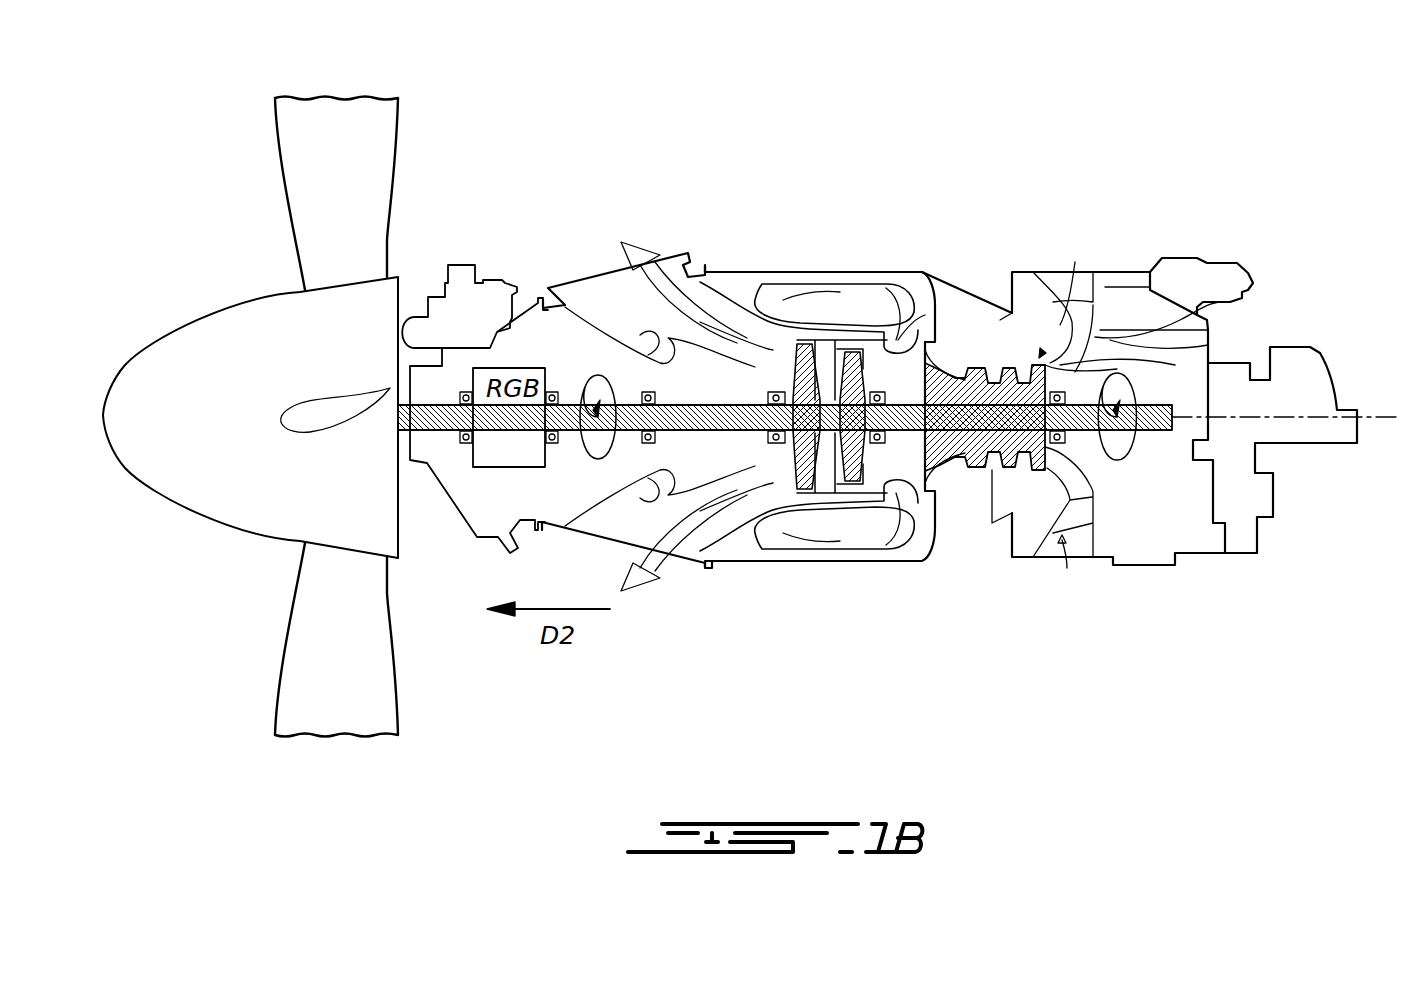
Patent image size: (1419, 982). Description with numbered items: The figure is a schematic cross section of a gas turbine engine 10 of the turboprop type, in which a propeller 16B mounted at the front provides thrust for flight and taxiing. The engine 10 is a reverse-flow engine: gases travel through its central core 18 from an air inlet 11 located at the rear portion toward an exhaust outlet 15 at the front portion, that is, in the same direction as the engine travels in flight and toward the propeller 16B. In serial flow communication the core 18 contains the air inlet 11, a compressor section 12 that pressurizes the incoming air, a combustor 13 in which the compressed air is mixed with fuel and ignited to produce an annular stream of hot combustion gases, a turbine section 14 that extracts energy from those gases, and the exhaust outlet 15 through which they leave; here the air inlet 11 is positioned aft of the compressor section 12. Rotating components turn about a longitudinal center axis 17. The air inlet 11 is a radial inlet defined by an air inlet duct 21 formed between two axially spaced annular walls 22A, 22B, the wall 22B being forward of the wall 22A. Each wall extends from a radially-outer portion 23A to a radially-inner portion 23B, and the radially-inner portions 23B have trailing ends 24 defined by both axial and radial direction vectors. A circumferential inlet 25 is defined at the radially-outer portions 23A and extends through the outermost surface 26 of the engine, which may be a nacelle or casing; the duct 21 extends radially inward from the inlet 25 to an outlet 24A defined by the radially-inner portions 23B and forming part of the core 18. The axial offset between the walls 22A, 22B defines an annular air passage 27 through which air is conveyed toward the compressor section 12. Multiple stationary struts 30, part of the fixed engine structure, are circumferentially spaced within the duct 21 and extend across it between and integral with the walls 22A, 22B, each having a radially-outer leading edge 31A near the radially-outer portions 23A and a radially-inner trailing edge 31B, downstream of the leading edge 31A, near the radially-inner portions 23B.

The gas turbine engine 10 is at (1200, 135).
The air inlet 11 is at (1093, 260).
The compressor section 12 is at (990, 473).
The combustor 13 is at (850, 535).
The turbine section 14 is at (827, 473).
The exhaust outlet 15 is at (676, 245).
The propeller 16B is at (372, 680).
The longitudinal center axis 17 is at (1378, 420).
The central core 18 is at (913, 460).
The air inlet duct 21 is at (1197, 258).
The annular wall 22A is at (1105, 287).
The annular wall 22B is at (1040, 348).
The radially-outer portion 23A is at (1022, 258).
The radially-inner portion 23B is at (920, 270).
The trailing end 24 is at (1200, 518).
The outlet 24A is at (1062, 551).
The inlet 25 is at (1048, 258).
The outermost surface 26 is at (1125, 262).
The annular air passage 27 is at (1148, 375).
The strut 30 is at (1100, 330).
The leading edge 31A is at (1082, 262).
The trailing edge 31B is at (1175, 375).